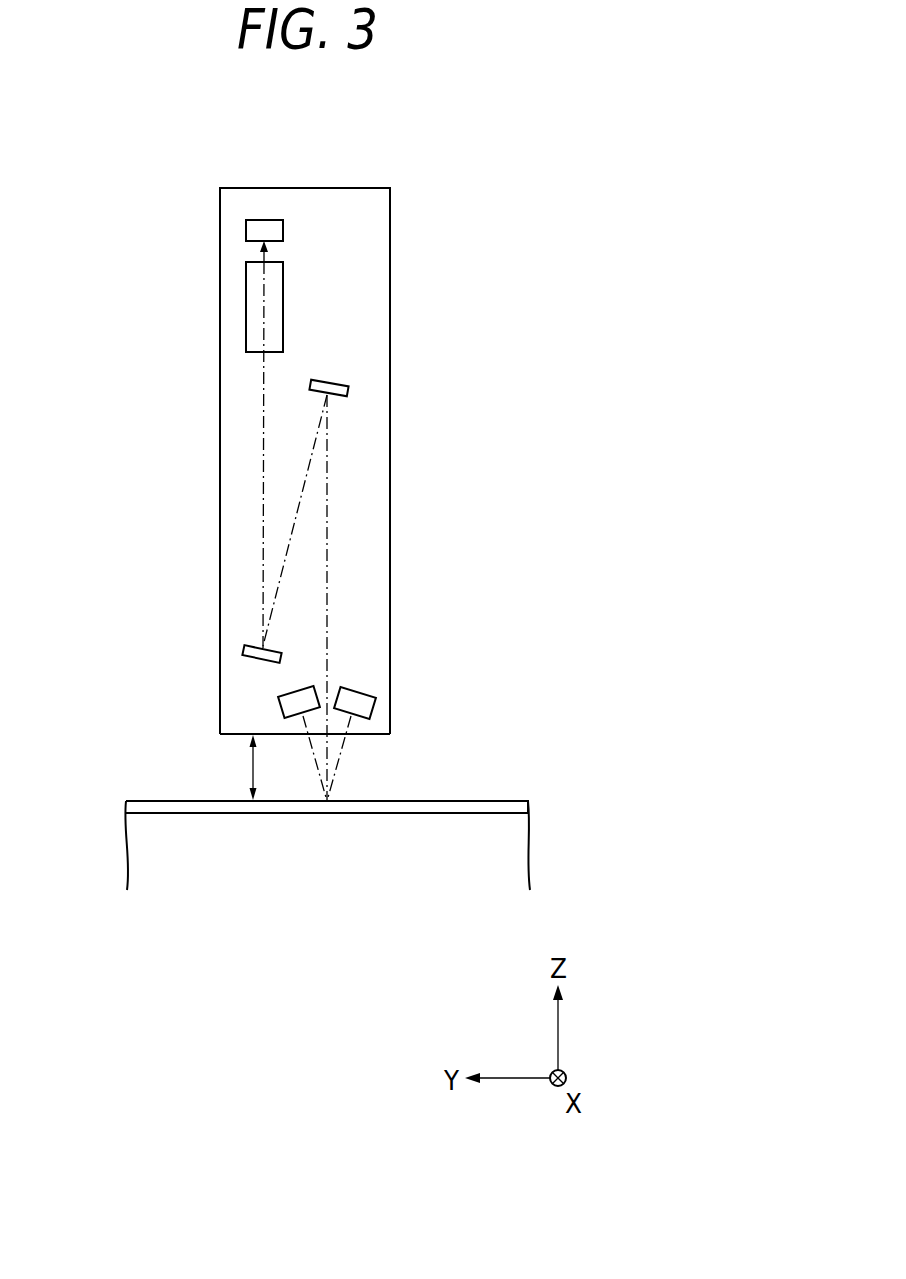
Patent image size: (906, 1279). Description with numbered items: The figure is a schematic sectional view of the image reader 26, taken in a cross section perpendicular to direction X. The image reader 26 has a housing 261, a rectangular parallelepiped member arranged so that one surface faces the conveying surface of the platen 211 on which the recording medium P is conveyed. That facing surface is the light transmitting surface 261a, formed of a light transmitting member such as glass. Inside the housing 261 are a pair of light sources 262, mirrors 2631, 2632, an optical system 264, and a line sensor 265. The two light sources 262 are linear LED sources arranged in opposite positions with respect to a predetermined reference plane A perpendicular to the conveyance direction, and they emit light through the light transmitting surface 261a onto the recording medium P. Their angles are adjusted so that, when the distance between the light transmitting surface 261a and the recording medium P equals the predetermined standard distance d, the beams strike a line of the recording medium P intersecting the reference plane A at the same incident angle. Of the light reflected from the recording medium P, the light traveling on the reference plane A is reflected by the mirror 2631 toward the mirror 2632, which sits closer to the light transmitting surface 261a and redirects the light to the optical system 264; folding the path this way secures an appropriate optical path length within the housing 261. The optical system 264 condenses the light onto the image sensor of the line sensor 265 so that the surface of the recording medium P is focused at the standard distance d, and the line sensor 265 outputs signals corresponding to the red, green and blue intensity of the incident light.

The image reader 26 is at (396, 136).
The housing 261 is at (390, 266).
The light transmitting surface 261a is at (363, 736).
The light sources 262 is at (278, 710).
The mirror 2631 is at (349, 392).
The mirror 2632 is at (243, 651).
The optical system 264 is at (246, 303).
The line sensor 265 is at (246, 229).
The platen 211 is at (153, 848).
The recording medium P is at (483, 801).
The reference plane A is at (327, 603).
The standard distance d is at (262, 767).